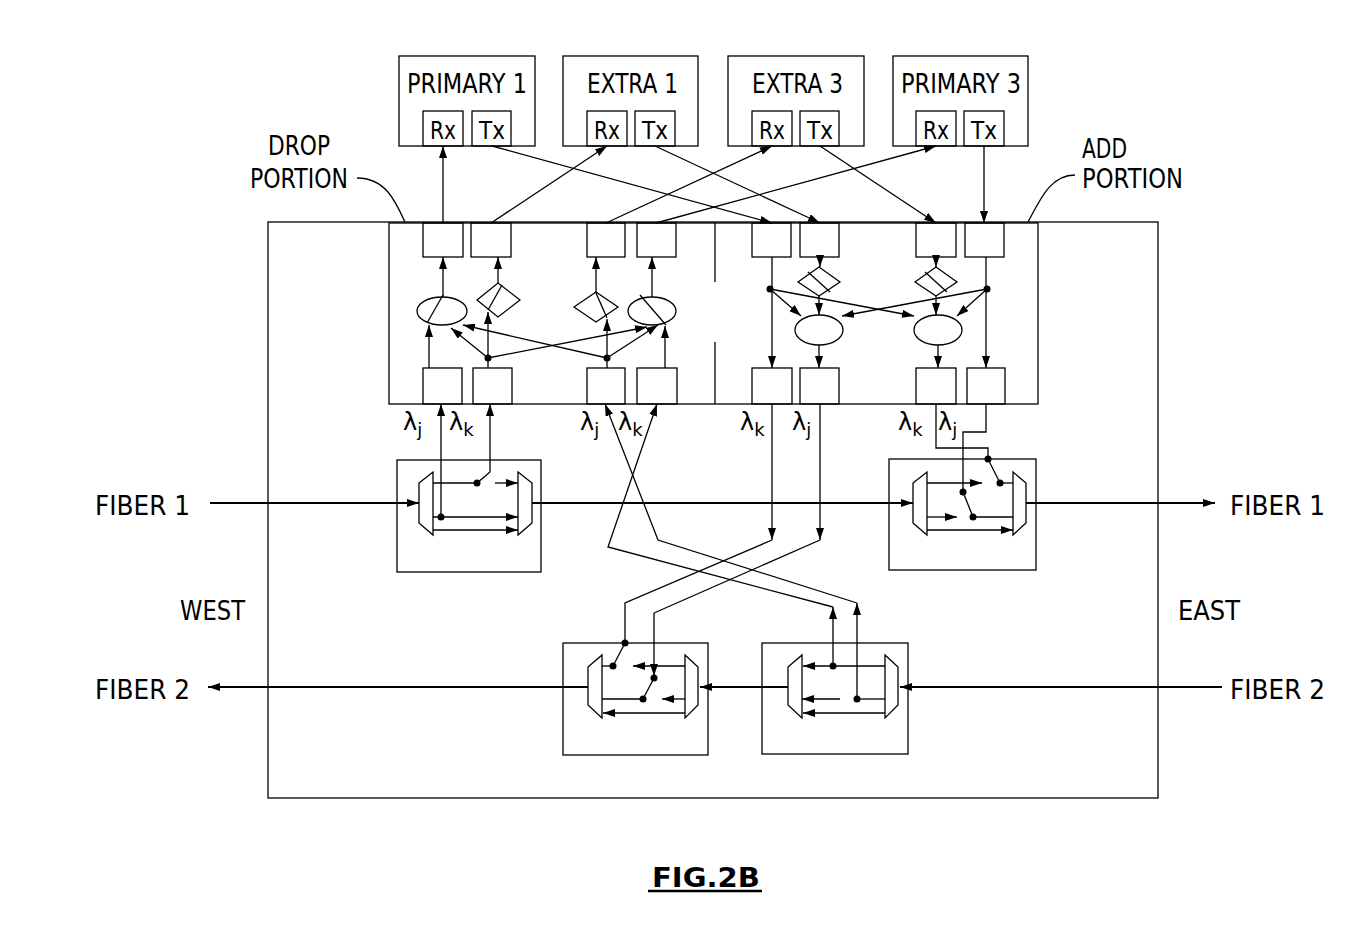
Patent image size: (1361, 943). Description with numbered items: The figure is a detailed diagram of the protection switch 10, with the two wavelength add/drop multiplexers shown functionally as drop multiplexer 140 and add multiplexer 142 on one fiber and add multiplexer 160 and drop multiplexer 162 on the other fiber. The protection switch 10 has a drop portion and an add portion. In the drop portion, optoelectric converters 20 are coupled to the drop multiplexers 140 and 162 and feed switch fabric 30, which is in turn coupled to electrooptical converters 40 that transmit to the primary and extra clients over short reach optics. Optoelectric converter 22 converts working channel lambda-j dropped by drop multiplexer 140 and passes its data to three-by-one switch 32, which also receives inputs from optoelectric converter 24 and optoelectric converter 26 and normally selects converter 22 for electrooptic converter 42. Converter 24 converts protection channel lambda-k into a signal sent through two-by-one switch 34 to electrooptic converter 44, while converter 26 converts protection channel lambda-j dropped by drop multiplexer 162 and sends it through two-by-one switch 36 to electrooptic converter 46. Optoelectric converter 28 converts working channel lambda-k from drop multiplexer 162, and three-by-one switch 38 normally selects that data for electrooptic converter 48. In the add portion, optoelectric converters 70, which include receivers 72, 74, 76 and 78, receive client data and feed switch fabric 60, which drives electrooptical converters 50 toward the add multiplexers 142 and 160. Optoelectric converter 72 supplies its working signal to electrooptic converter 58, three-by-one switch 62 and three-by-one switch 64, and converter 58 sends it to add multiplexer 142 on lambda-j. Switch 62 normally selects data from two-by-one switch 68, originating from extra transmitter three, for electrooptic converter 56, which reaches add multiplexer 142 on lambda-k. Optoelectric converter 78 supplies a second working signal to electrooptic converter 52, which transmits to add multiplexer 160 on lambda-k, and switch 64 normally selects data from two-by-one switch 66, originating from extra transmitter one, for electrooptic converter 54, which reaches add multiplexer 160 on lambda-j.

The protection switch 10 is at (1215, 110).
The optoelectric converters 20 is at (498, 384).
The optoelectric converter 22 is at (420, 391).
The optoelectric converter 24 is at (512, 386).
The optoelectric converter 26 is at (586, 390).
The optoelectric converter 28 is at (665, 408).
The switch fabric 30 is at (481, 300).
The 3×1 switch 32 is at (418, 309).
The 2×1 switch 34 is at (502, 286).
The 2×1 switch 36 is at (574, 309).
The 3×1 switch 38 is at (677, 313).
The electrooptical converters 40 is at (465, 238).
The electrooptic converter 42 is at (423, 237).
The electrooptic converter 44 is at (488, 222).
The electrooptic converter 46 is at (602, 222).
The electrooptic converter 48 is at (660, 258).
The electrooptical converters 50 is at (880, 522).
The electrooptic converter 52 is at (780, 406).
The electrooptic converter 54 is at (828, 406).
The electrooptic converter 56 is at (916, 386).
The electrooptic converter 58 is at (1005, 386).
The switch fabric 60 is at (965, 311).
The 3×1 switch 62 is at (922, 345).
The 3×1 switch 64 is at (843, 334).
The 2×1 switch 66 is at (841, 284).
The 2×1 switch 68 is at (916, 281).
The optoelectric converters 70 is at (928, 270).
The optoelectric converter 72 is at (1003, 258).
The receiver 74 is at (948, 222).
The receiver 76 is at (830, 222).
The optoelectric converter 78 is at (766, 289).
The drop multiplexer 140 is at (406, 535).
The add multiplexer 142 is at (1026, 472).
The add multiplexer 160 is at (572, 721).
The drop multiplexer 162 is at (900, 728).